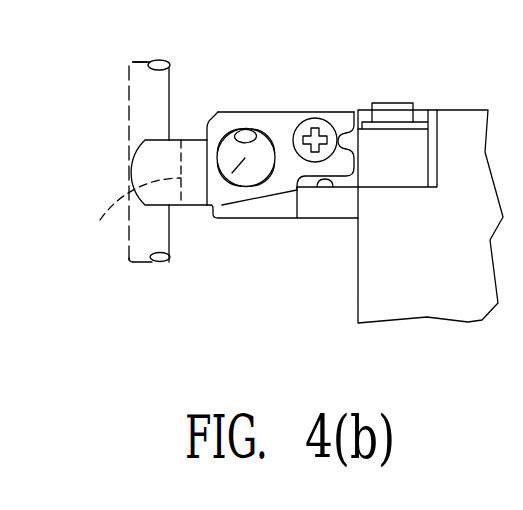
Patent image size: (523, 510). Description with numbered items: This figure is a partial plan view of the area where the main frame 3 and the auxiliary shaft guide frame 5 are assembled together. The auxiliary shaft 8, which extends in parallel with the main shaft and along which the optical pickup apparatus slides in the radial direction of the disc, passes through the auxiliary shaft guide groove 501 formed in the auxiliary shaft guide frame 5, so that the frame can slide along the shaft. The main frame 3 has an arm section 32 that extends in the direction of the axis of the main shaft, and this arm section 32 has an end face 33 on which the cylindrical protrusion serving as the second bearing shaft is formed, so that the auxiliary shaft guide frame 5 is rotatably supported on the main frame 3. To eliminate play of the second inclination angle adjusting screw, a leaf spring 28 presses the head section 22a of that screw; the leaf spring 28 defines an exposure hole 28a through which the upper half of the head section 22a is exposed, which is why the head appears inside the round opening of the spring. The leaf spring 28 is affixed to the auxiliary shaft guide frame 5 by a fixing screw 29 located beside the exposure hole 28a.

The main frame 3 is at (390, 280).
The auxiliary shaft guide frame 5 is at (276, 142).
The auxiliary shaft 8 is at (130, 257).
The auxiliary shaft guide groove 501 is at (141, 197).
The head section 22a is at (245, 158).
The leaf spring 28 is at (283, 112).
The exposure hole 28a is at (247, 131).
The fixing screw 29 is at (320, 127).
The arm section 32 is at (278, 208).
The end face 33 is at (317, 183).